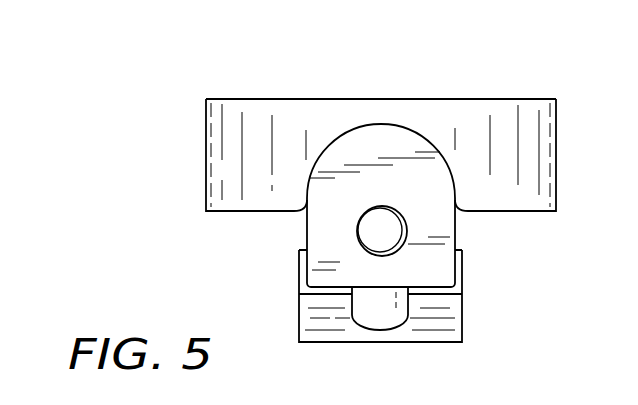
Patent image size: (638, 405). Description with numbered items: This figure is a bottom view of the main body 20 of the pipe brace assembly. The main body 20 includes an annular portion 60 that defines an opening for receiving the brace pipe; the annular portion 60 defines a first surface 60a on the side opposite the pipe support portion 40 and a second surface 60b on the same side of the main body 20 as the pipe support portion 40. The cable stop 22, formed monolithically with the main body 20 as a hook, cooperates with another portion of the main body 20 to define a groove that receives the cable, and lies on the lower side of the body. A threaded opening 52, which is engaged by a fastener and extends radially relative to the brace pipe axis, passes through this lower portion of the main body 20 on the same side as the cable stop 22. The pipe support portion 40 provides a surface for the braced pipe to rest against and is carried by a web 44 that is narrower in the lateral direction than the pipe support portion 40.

The main body 20 is at (156, 191).
The cable stop 22 is at (381, 143).
The pipe support portion 40 is at (462, 315).
The web 44 is at (383, 320).
The threaded opening 52 is at (404, 235).
The annular portion 60 is at (188, 123).
The first surface 60a is at (252, 104).
The second surface 60b is at (250, 206).